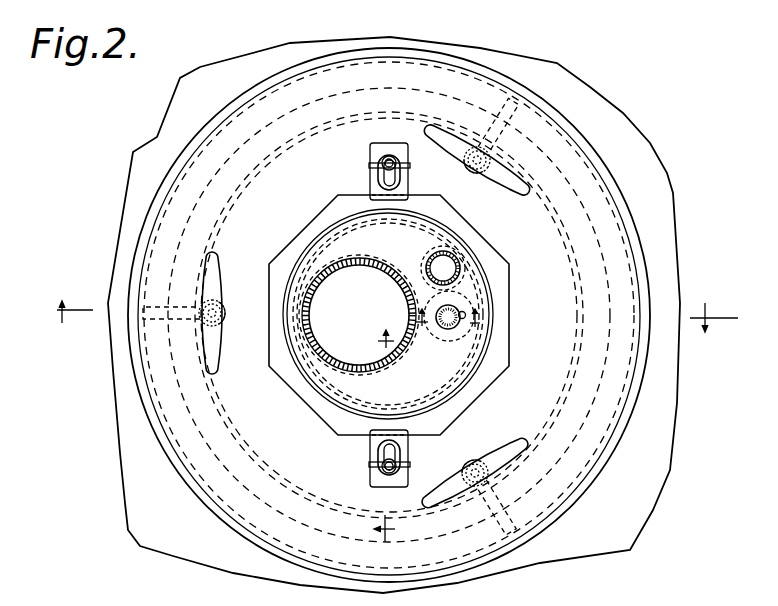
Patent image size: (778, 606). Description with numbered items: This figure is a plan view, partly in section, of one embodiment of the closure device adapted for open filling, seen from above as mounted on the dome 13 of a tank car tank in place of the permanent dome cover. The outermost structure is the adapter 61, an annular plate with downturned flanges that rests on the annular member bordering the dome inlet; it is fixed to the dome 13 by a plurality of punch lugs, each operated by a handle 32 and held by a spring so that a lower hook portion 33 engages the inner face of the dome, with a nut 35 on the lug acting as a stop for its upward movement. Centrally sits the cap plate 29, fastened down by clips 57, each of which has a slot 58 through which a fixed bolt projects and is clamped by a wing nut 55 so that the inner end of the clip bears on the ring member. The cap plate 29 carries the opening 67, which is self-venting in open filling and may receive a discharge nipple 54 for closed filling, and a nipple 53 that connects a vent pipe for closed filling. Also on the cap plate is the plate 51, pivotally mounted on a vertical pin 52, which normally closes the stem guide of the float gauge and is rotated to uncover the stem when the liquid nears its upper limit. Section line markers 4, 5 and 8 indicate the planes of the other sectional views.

The dome 13 is at (674, 192).
The adapter 61 is at (590, 195).
The cap plate 29 is at (324, 222).
The handle 32 is at (216, 289).
The lower hook portion 33 is at (514, 511).
The clip 57 is at (370, 157).
The slot 58 is at (398, 178).
The nut 35 is at (410, 166).
The wing nut 55 is at (369, 464).
The discharge nipple 54 is at (352, 263).
The opening 67 is at (358, 350).
The nipple 53 is at (428, 266).
The plate 51 is at (446, 328).
The vertical pin 52 is at (462, 319).
The section line 8- 8 is at (448, 325).
The section line 4- 4 is at (391, 433).
The section line 5- 5 is at (389, 316).